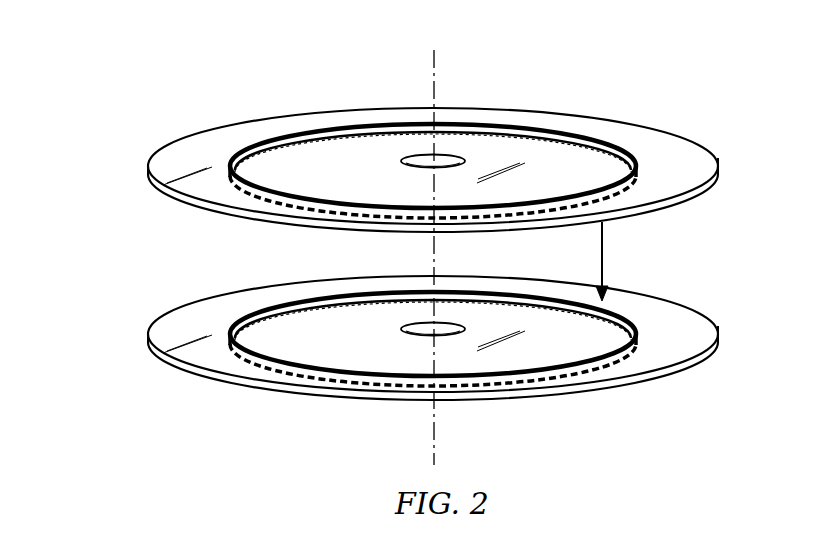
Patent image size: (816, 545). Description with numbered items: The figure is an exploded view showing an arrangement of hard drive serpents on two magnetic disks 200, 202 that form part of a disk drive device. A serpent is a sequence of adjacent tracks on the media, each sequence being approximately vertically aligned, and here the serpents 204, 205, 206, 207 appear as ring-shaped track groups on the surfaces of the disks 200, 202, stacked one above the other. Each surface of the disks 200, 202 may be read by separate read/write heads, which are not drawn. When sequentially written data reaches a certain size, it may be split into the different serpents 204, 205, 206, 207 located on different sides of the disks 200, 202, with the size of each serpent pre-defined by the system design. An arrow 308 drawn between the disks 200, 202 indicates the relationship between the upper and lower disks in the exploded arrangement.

The magnetic disk 200 is at (148, 165).
The magnetic disk 202 is at (150, 334).
The serpent 204 is at (340, 124).
The serpent 205 is at (488, 129).
The serpent 206 is at (247, 312).
The serpent 207 is at (558, 301).
The arrow indicating stacking direction 308 is at (603, 253).